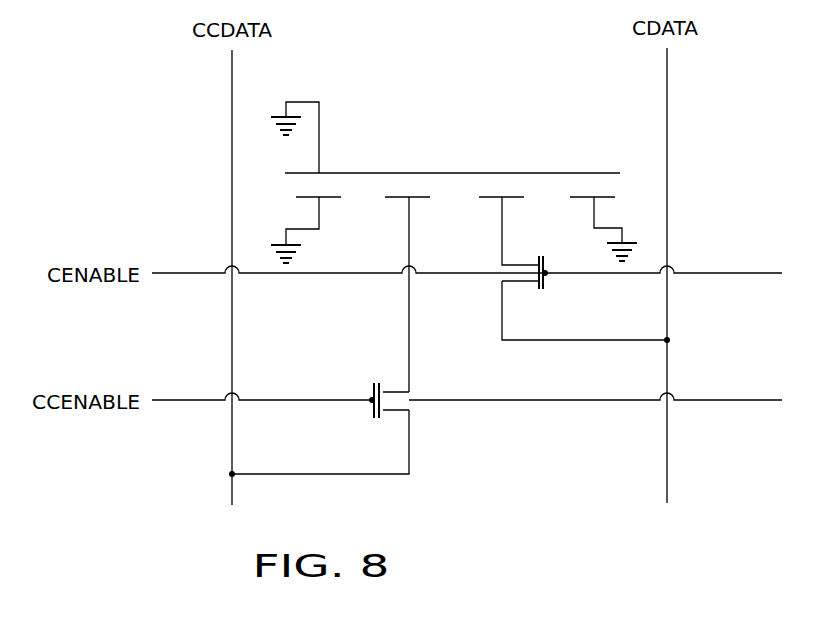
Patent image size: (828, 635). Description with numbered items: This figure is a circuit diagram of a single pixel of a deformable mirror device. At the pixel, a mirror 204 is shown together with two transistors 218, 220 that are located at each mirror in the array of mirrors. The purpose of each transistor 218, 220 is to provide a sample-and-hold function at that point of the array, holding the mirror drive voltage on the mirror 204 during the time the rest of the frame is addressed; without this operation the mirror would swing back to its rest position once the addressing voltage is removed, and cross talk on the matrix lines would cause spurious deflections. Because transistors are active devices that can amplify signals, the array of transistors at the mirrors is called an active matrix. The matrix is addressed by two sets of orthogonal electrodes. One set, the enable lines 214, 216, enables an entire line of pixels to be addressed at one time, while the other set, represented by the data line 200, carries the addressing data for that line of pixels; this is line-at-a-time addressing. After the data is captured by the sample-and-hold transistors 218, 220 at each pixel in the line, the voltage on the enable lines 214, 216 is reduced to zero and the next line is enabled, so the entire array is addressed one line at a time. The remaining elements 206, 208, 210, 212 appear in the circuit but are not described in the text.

The addressing data line 200 is at (232, 107).
The mirror 204 is at (450, 172).
The first transistor 206 is at (309, 200).
The second transistor 208 is at (394, 200).
The third transistor 210 is at (490, 200).
The fourth transistor 212 is at (607, 200).
The enable electrode 214 is at (203, 272).
The enable electrode 216 is at (208, 399).
The transistor 218 is at (544, 290).
The transistor 220 is at (374, 409).